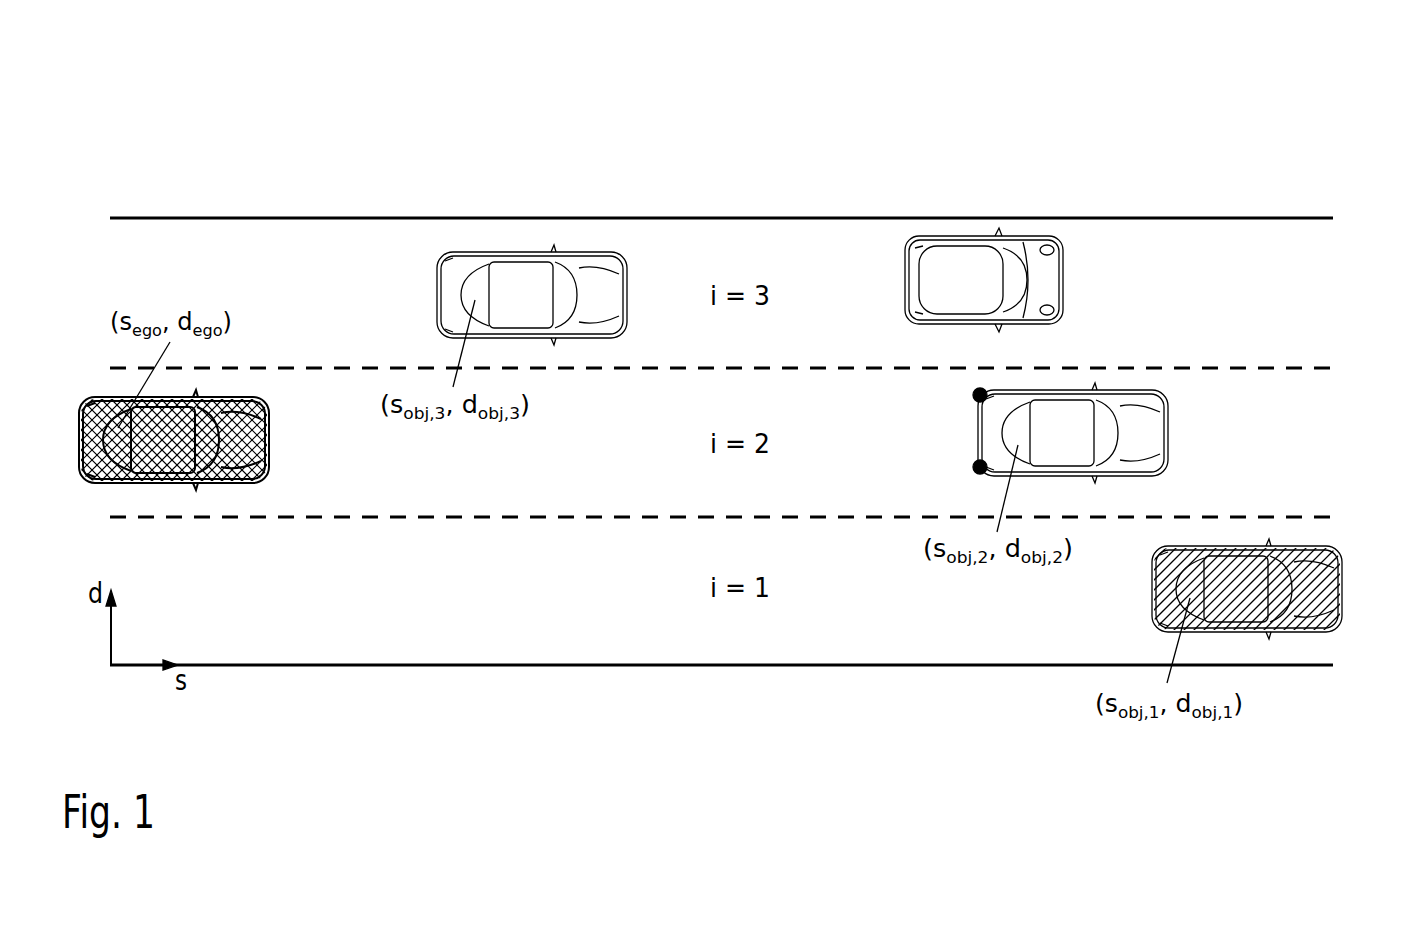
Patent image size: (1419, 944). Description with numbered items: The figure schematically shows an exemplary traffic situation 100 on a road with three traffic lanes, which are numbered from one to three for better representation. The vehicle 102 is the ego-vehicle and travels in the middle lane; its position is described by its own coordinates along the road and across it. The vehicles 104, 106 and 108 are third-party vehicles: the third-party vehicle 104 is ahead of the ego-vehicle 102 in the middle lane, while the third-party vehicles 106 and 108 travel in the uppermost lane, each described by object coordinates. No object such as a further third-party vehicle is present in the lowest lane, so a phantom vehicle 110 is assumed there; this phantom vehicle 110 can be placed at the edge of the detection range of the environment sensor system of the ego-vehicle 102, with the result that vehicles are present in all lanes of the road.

The traffic situation 100 is at (103, 118).
The ego-vehicle 102 is at (96, 401).
The third-party vehicle 104 is at (980, 432).
The third-party vehicle 106 is at (437, 287).
The third-party vehicle 108 is at (905, 278).
The phantom vehicle 110 is at (1343, 588).